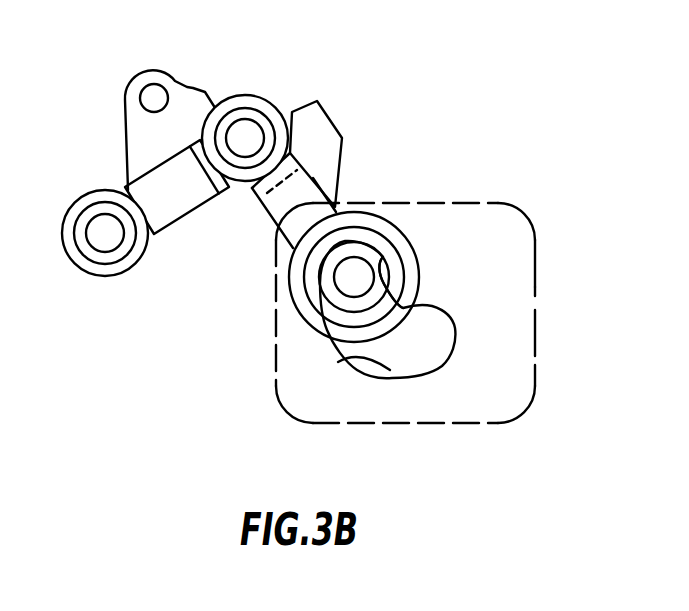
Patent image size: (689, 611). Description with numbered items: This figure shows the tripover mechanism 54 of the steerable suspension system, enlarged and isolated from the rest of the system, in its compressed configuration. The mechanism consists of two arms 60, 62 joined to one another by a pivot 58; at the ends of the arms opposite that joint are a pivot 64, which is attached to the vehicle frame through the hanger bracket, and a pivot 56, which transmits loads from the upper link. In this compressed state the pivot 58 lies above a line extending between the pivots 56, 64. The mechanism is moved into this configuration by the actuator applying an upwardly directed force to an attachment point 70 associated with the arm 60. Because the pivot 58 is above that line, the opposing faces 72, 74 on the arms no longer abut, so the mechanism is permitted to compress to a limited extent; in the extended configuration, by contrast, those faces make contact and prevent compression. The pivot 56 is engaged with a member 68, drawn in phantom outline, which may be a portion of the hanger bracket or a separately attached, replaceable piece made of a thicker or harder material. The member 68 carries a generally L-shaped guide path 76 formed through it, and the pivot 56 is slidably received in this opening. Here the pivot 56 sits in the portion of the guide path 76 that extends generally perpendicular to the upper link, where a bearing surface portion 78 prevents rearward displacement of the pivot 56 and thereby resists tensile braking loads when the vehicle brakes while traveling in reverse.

The tripover mechanism 54 is at (445, 100).
The pivot 56 is at (350, 313).
The pivot 58 is at (248, 115).
The arm 60 is at (203, 215).
The arm 62 is at (313, 178).
The pivot 64 is at (113, 252).
The member 68 is at (535, 287).
The attachment point 70 is at (164, 89).
The face 72 is at (205, 92).
The face 74 is at (294, 110).
The guide path 76 is at (393, 371).
The bearing surface portion 78 is at (383, 258).